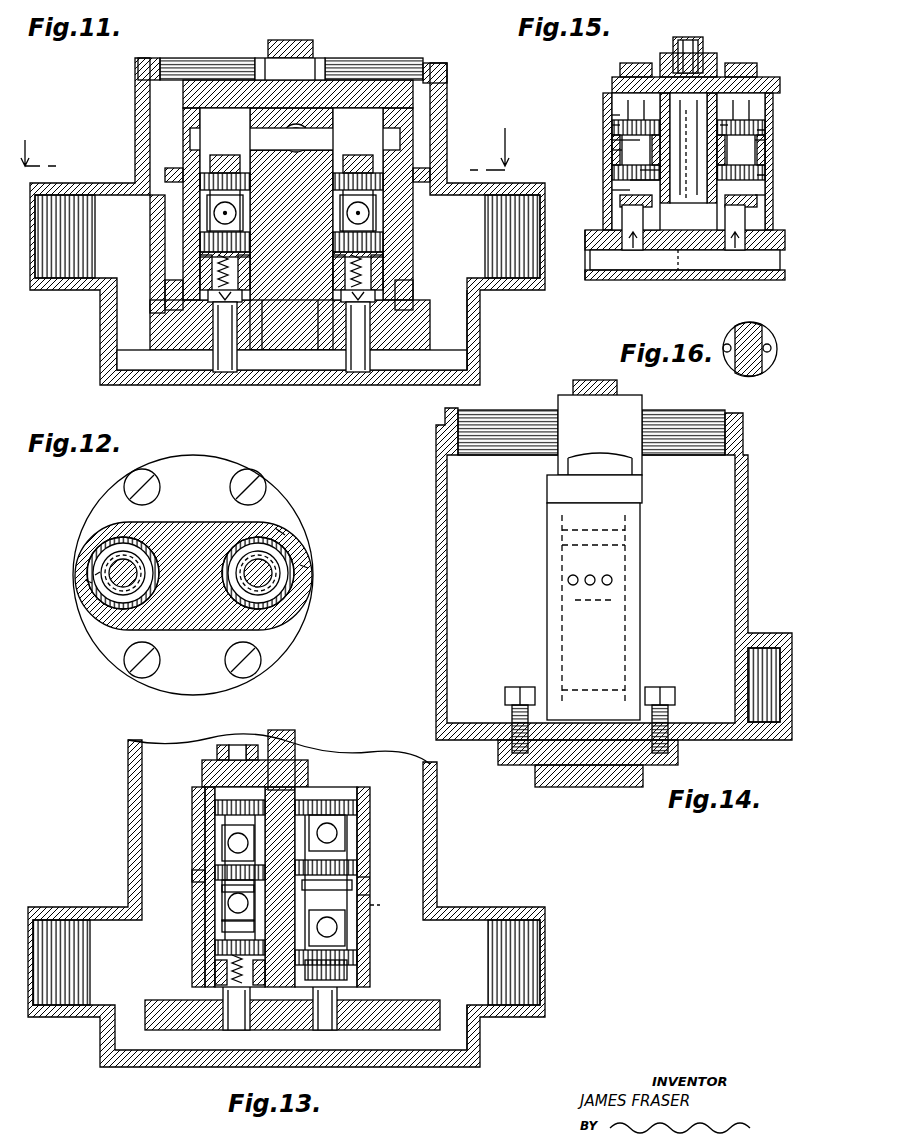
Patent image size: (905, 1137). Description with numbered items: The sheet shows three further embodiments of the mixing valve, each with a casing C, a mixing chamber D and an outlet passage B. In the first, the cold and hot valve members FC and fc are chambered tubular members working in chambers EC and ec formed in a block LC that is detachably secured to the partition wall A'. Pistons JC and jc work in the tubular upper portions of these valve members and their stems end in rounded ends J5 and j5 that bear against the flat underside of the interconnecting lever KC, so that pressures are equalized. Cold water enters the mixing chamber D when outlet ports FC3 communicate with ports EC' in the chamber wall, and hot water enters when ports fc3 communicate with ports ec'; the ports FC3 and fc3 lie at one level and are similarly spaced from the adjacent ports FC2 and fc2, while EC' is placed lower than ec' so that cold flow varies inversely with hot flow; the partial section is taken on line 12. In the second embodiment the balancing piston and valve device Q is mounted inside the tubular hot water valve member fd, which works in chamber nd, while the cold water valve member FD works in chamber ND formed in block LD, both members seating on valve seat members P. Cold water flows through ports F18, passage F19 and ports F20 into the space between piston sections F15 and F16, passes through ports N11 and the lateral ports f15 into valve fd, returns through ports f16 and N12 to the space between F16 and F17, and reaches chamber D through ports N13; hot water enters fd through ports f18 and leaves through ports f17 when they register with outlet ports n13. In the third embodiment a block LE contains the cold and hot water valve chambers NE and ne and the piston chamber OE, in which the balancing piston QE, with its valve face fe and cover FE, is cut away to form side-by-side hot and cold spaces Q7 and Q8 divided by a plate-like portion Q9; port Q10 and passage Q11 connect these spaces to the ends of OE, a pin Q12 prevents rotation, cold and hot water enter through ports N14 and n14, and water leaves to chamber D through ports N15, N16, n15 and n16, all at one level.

In FIG. 11, the valve casing C is at (120, 345).
In FIG. 14, the valve casing C is at (578, 780).
In FIG. 15, the valve casing C is at (598, 262).
In FIG. 13, the valve casing C is at (123, 1027).
In FIG. 11, the mixing chamber D is at (413, 92).
In FIG. 14, the mixing chamber D is at (715, 484).
In FIG. 13, the mixing chamber D is at (417, 773).
In FIG. 11, the outlet port B is at (445, 350).
In FIG. 15, the outlet port B is at (762, 262).
In FIG. 13, the outlet port B is at (453, 1037).
In FIG. 11, the partition wall A' is at (292, 369).
In FIG. 11, the block LC is at (168, 270).
In FIG. 12, the block LC is at (137, 610).
In FIG. 11, the chamber ec is at (119, 310).
In FIG. 11, the ports ec' is at (135, 168).
In FIG. 12, the ports ec' is at (53, 567).
In FIG. 11, the chamber EC is at (452, 303).
In FIG. 11, the outlet ports EC' is at (477, 184).
In FIG. 12, the outlet ports EC' is at (302, 505).
In FIG. 11, the lever KC is at (400, 135).
In FIG. 11, the valve member fc is at (178, 150).
In FIG. 12, the valve member fc is at (163, 540).
In FIG. 11, the valve member FC is at (395, 165).
In FIG. 12, the valve member FC is at (230, 527).
In FIG. 11, the ports fc2 is at (185, 230).
In FIG. 11, the ports FC2 is at (395, 243).
In FIG. 11, the ports fc3 is at (270, 215).
In FIG. 12, the ports fc3 is at (95, 575).
In FIG. 11, the outlet ports FC3 is at (315, 215).
In FIG. 12, the outlet ports FC3 is at (305, 566).
In FIG. 11, the rounded end j5 is at (205, 170).
In FIG. 11, the rounded end J5 is at (378, 170).
In FIG. 11, the piston jc is at (220, 160).
In FIG. 12, the piston jc is at (120, 590).
In FIG. 11, the piston JC is at (380, 150).
In FIG. 12, the piston JC is at (287, 623).
In FIG. 11, the section line 12 is at (265, 149).
In FIG. 14, the block LD is at (547, 572).
In FIG. 13, the block LD is at (367, 833).
In FIG. 14, the ports N13 is at (607, 578).
In FIG. 13, the ports N13 is at (360, 857).
In FIG. 14, the valve member FD is at (640, 600).
In FIG. 13, the valve member FD is at (373, 870).
In FIG. 15, the cover plate FE is at (740, 97).
In FIG. 15, the block LE is at (610, 120).
In FIG. 15, the plate-like piston portion Q9 is at (625, 125).
In FIG. 16, the plate-like piston portion Q9 is at (752, 332).
In FIG. 15, the cold water space Q8 is at (765, 128).
In FIG. 15, the port Q10 is at (700, 110).
In FIG. 15, the hot water space Q7 is at (640, 140).
In FIG. 15, the passage Q11 is at (645, 262).
In FIG. 16, the passage Q11 is at (725, 353).
In FIG. 15, the pin Q12 is at (708, 262).
In FIG. 16, the pin Q12 is at (772, 348).
In FIG. 15, the balancing piston QE is at (678, 262).
In FIG. 16, the balancing piston QE is at (770, 385).
In FIG. 15, the ports N14 is at (727, 125).
In FIG. 15, the ports N15 is at (762, 196).
In FIG. 15, the ports N16 is at (762, 142).
In FIG. 15, the cold water valve chamber NE is at (762, 130).
In FIG. 15, the ports n14 is at (625, 192).
In FIG. 15, the ports n15 is at (655, 182).
In FIG. 15, the ports n16 is at (620, 152).
In FIG. 15, the bore fe is at (625, 117).
In FIG. 15, the hot water valve chamber ne is at (615, 125).
In FIG. 15, the chamber OE is at (660, 170).
In FIG. 13, the chamber ND is at (467, 917).
In FIG. 13, the valve seat member P is at (210, 1000).
In FIG. 13, the ports F20 is at (370, 830).
In FIG. 13, the ports N11 is at (290, 800).
In FIG. 13, the piston section F15 is at (305, 800).
In FIG. 13, the ports f15 is at (193, 797).
In FIG. 13, the valve member fd is at (193, 837).
In FIG. 13, the balancing piston and valve device Q is at (193, 860).
In FIG. 13, the outlet ports n13 is at (193, 872).
In FIG. 13, the ports f17 is at (205, 885).
In FIG. 13, the ports f16 is at (227, 887).
In FIG. 13, the ports f18 is at (213, 923).
In FIG. 13, the chamber nd is at (207, 970).
In FIG. 13, the piston section F16 is at (357, 847).
In FIG. 13, the piston portion F17 is at (370, 895).
In FIG. 13, the ports F18 is at (335, 930).
In FIG. 13, the passage F19 is at (375, 906).
In FIG. 13, the ports N12 is at (367, 877).